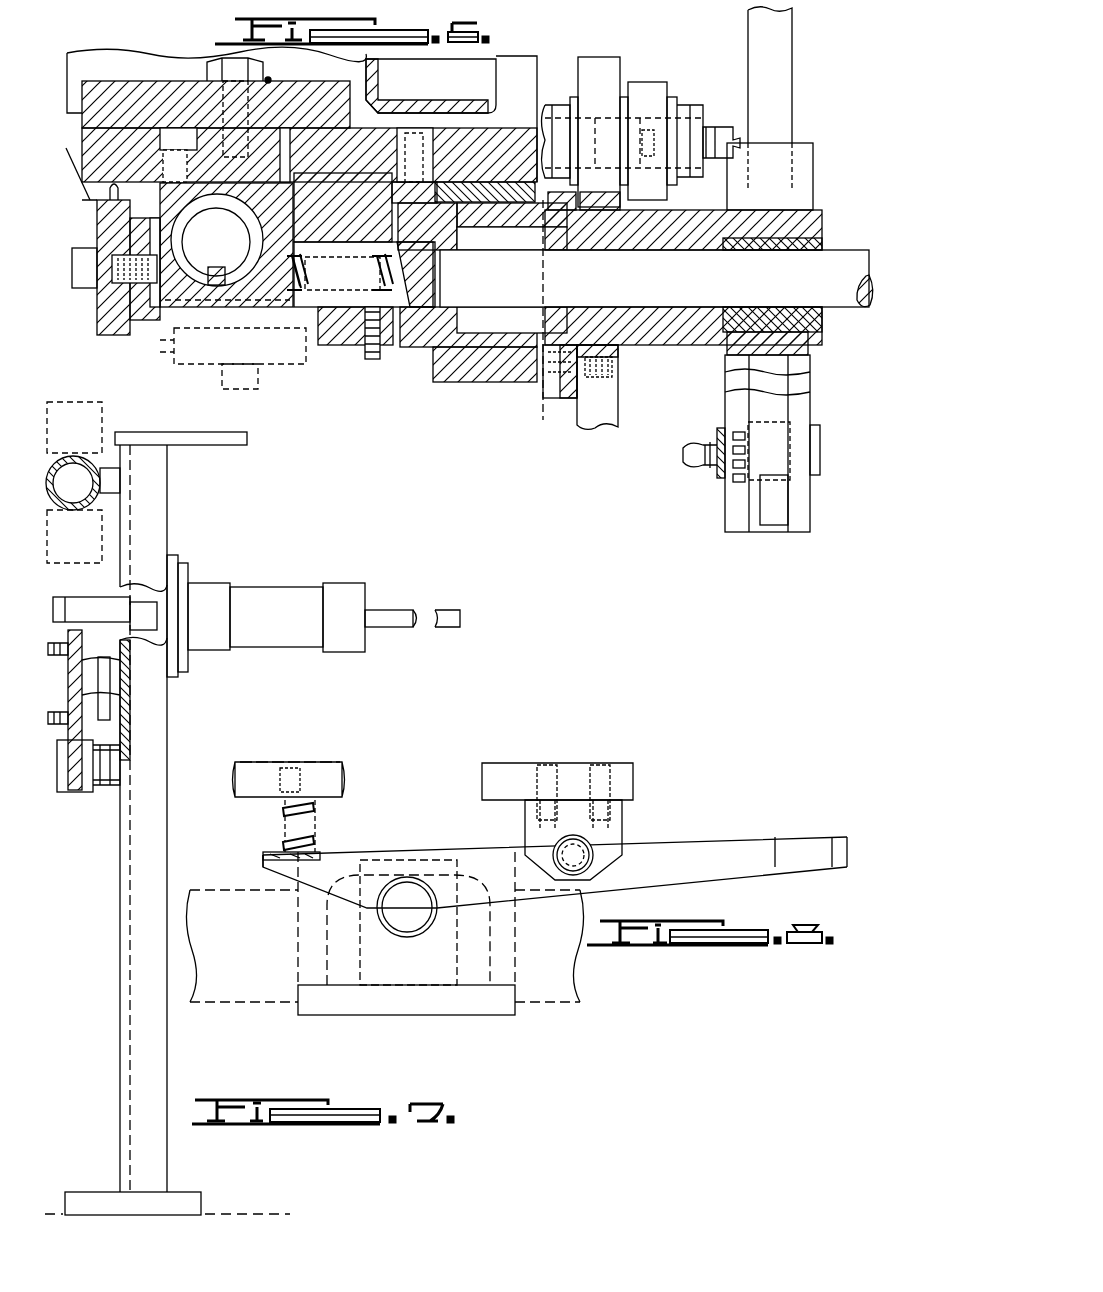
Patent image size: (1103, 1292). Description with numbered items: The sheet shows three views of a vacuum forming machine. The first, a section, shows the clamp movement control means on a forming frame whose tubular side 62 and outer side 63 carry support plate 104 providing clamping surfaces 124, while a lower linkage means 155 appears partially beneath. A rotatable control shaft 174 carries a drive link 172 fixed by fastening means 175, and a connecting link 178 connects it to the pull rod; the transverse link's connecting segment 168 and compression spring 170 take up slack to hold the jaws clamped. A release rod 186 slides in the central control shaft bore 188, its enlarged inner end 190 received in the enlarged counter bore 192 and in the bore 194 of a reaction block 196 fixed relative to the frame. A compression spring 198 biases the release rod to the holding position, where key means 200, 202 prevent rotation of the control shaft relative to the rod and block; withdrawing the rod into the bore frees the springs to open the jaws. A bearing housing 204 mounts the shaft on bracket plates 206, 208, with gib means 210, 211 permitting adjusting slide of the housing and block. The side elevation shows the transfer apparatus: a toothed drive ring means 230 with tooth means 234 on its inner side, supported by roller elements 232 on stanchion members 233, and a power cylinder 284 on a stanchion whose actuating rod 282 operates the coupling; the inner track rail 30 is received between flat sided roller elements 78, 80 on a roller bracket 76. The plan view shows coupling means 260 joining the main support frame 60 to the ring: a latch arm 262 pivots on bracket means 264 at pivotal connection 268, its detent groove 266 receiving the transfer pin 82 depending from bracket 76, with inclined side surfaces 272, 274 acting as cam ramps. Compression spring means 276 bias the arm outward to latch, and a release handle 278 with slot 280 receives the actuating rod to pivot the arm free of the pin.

In FIG. 5, the side of main support frame 62 is at (67, 90).
In FIG. 5, the bracket plate 206 is at (140, 92).
In FIG. 5, the bracket plate 208 is at (458, 95).
In FIG. 5, the gib means 210 is at (282, 150).
In FIG. 5, the gib means 211 is at (490, 178).
In FIG. 5, the outer side of frame member 63 is at (540, 145).
In FIG. 5, the support plate 104 is at (90, 205).
In FIG. 5, the clamping surface 124 is at (96, 215).
In FIG. 5, the reaction block 196 is at (340, 185).
In FIG. 5, the bore 194 is at (361, 254).
In FIG. 5, the compression spring 198 is at (292, 310).
In FIG. 5, the key means 202 is at (360, 345).
In FIG. 5, the key means 200 is at (420, 306).
In FIG. 5, the bearing housing 204 is at (455, 368).
In FIG. 5, the enlarged inner end of release rod 190 is at (420, 270).
In FIG. 5, the enlarged counter bore 192 is at (428, 248).
In FIG. 5, the central control shaft bore 188 is at (660, 262).
In FIG. 5, the release rod 186 is at (842, 300).
In FIG. 5, the lower linkage means 155 is at (808, 98).
In FIG. 5, the connecting segment 168 is at (655, 90).
In FIG. 5, the compression spring 170 is at (550, 110).
In FIG. 5, the control shaft 174 is at (672, 356).
In FIG. 5, the fastening means 175 is at (545, 400).
In FIG. 5, the drive link 172 is at (598, 414).
In FIG. 5, the connecting link 178 is at (730, 505).
In FIG. 7, the roller element 78 is at (72, 410).
In FIG. 7, the inner track rail 30 is at (92, 484).
In FIG. 7, the roller element 80 is at (95, 530).
In FIG. 7, the power cylinder 284 is at (315, 583).
In FIG. 7, the actuating rod 282 is at (210, 612).
In FIG. 7, the coupling means 260 is at (107, 599).
In FIG. 8, the coupling means 260 is at (507, 842).
In FIG. 7, the tooth means 234 is at (110, 690).
In FIG. 7, the toothed drive ring means 230 is at (96, 710).
In FIG. 8, the toothed drive ring means 230 is at (330, 762).
In FIG. 7, the roller element 232 is at (70, 792).
In FIG. 7, the stanchion member 233 is at (125, 882).
In FIG. 8, the main support frame 60 is at (250, 1003).
In FIG. 8, the roller bracket 76 is at (470, 1018).
In FIG. 8, the transfer pin 82 is at (430, 912).
In FIG. 8, the detent groove 266 is at (402, 915).
In FIG. 8, the latch arm 262 is at (392, 852).
In FIG. 8, the side surface 272 is at (318, 895).
In FIG. 8, the side surface 274 is at (490, 940).
In FIG. 8, the release handle 278 is at (724, 862).
In FIG. 8, the slot 280 is at (782, 845).
In FIG. 8, the bracket means 264 is at (622, 855).
In FIG. 8, the pivotal connection 268 is at (585, 874).
In FIG. 8, the compression spring means 276 is at (283, 812).